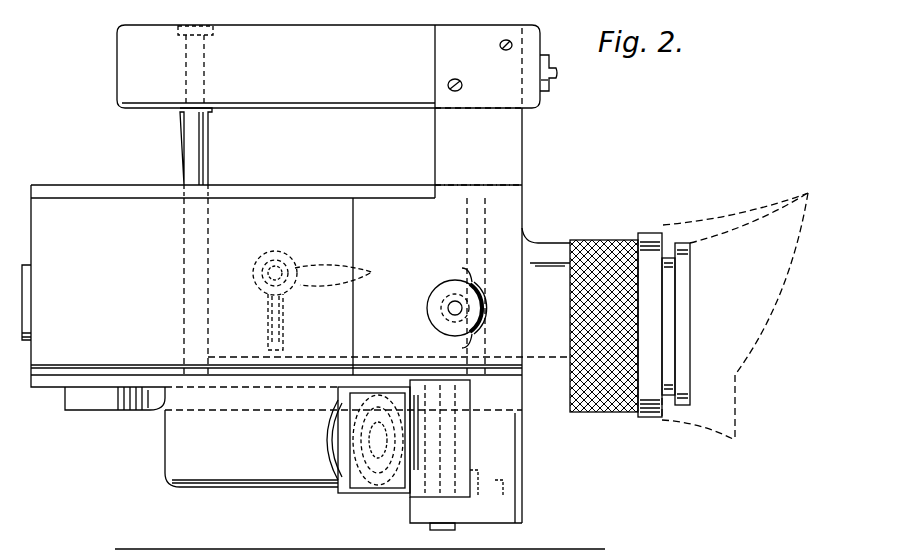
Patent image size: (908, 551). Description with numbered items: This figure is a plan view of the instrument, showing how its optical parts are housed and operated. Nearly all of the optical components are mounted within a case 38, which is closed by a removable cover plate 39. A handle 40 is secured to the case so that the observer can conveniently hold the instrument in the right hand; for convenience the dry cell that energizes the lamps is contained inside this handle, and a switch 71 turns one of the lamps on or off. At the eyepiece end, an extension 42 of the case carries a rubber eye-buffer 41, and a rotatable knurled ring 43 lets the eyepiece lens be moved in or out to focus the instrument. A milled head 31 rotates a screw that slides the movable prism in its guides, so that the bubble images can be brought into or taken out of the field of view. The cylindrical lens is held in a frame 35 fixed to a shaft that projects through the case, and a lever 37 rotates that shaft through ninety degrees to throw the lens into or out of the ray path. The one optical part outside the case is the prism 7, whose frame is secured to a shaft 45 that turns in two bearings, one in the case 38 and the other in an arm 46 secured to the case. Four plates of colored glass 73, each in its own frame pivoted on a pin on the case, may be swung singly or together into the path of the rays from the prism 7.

The prism 7 is at (425, 458).
The milled head 31 is at (478, 312).
The frame 35 is at (290, 331).
The lever 37 is at (372, 272).
The case 38 is at (52, 230).
The removable cover plate 39 is at (137, 190).
The handle 40 is at (403, 100).
The rubber eye-buffer 41 is at (735, 338).
The extension 42 is at (580, 262).
The rotatable knurled ring 43 is at (614, 414).
The shaft 45 is at (442, 530).
The arm 46 is at (522, 490).
The switch 71 is at (556, 76).
The plates of colored glass 73 is at (378, 498).